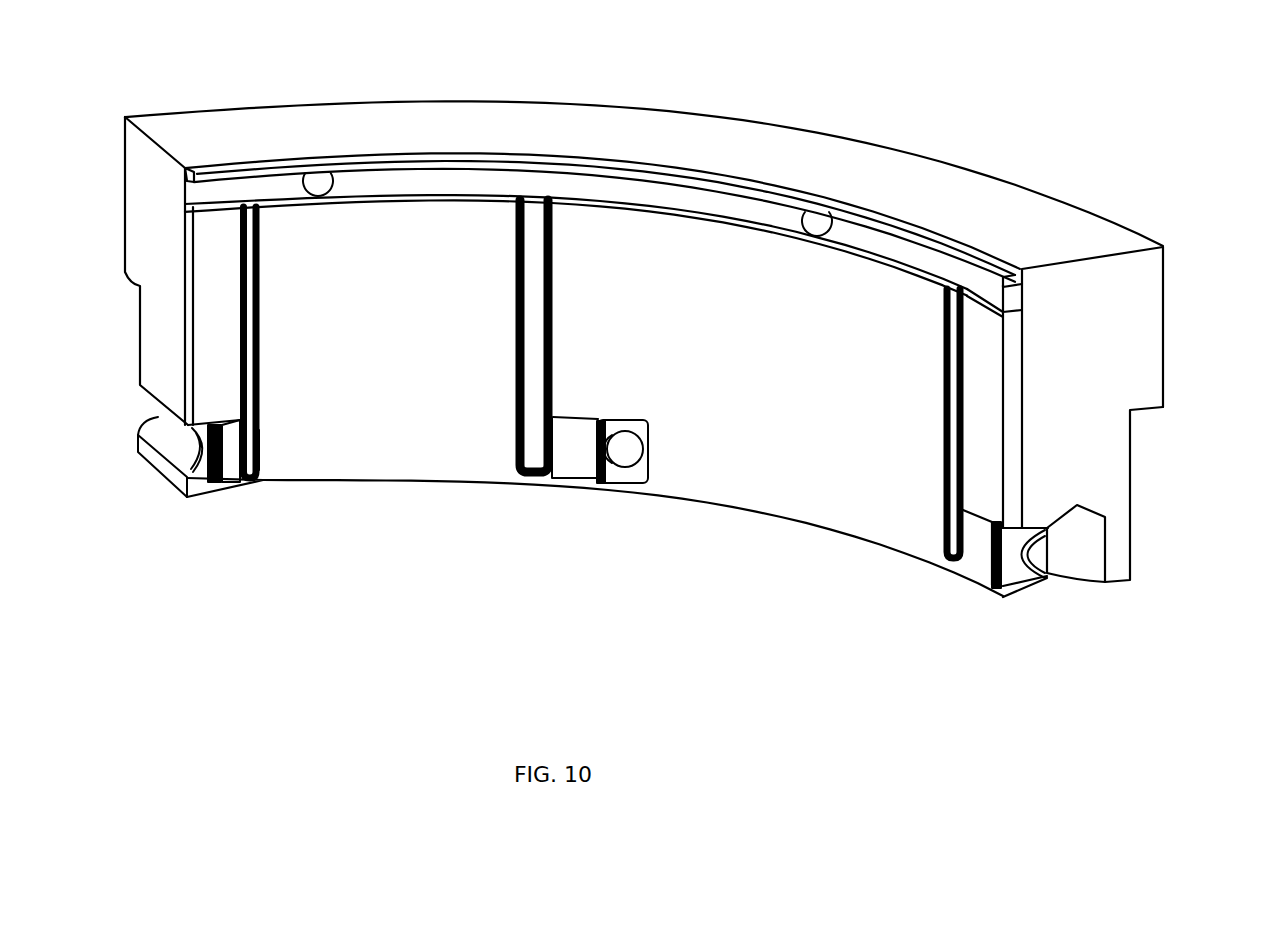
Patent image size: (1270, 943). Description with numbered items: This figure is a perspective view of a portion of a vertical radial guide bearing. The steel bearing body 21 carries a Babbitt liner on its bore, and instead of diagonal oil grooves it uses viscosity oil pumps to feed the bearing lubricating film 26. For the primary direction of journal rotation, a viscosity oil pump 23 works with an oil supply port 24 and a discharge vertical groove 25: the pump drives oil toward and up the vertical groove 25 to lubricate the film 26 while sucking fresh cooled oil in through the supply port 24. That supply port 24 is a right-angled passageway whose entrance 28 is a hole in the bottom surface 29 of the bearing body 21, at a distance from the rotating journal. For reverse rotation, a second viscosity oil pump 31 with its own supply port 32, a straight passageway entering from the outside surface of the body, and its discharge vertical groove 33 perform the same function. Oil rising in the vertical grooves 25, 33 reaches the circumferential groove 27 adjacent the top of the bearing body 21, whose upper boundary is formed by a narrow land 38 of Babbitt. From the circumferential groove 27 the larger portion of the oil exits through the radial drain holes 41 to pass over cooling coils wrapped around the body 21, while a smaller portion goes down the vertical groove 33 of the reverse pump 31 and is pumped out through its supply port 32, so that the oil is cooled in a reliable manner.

The bearing body 21 is at (1018, 183).
The viscosity oil pump 23 is at (580, 462).
The oil supply port 24 is at (627, 456).
The discharge vertical groove 25 is at (520, 478).
The bearing lubricating film 26 is at (408, 354).
The circumferential groove 27 is at (1018, 297).
The entrance 28 is at (1077, 566).
The bottom surface 29 is at (1120, 570).
The viscosity oil pump 31 is at (232, 472).
The supply port 32 is at (183, 450).
The discharge vertical groove 33 is at (260, 463).
The narrow land 38 is at (728, 188).
The radial drain hole 41 is at (322, 178).